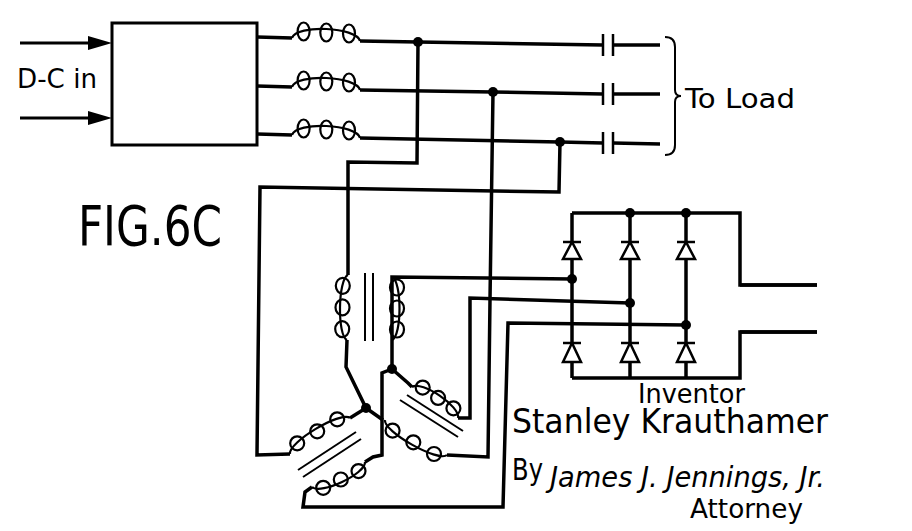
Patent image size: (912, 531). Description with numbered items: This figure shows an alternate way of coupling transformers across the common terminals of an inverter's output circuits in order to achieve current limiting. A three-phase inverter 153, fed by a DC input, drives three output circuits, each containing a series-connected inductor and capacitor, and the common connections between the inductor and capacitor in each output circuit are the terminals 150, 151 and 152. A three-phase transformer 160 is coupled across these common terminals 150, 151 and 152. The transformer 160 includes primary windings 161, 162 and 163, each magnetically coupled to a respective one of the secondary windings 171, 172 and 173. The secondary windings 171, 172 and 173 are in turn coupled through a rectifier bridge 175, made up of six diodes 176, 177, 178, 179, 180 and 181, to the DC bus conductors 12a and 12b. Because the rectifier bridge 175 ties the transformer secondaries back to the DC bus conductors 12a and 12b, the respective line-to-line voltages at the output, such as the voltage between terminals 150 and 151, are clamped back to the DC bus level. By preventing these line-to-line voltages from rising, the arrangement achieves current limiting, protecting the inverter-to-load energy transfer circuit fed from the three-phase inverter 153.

The three phase inverter 153 is at (184, 72).
The common terminal 150 is at (420, 40).
The common terminal 151 is at (495, 90).
The common terminal 152 is at (561, 140).
The three-phase transformer 160 is at (369, 390).
The primary winding 161 is at (327, 307).
The primary winding 162 is at (416, 447).
The primary winding 163 is at (315, 430).
The secondary winding 171 is at (410, 308).
The secondary winding 172 is at (436, 389).
The secondary winding 173 is at (342, 484).
The rectifier bridge 175 is at (667, 276).
The diode 176 is at (581, 252).
The diode 177 is at (639, 252).
The diode 178 is at (695, 252).
The diode 179 is at (562, 355).
The diode 180 is at (622, 350).
The diode 181 is at (700, 352).
The DC bus conductor 12a is at (785, 285).
The DC bus conductor 12b is at (785, 332).